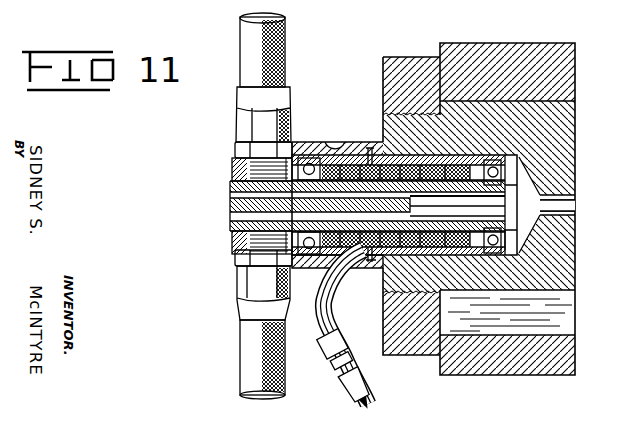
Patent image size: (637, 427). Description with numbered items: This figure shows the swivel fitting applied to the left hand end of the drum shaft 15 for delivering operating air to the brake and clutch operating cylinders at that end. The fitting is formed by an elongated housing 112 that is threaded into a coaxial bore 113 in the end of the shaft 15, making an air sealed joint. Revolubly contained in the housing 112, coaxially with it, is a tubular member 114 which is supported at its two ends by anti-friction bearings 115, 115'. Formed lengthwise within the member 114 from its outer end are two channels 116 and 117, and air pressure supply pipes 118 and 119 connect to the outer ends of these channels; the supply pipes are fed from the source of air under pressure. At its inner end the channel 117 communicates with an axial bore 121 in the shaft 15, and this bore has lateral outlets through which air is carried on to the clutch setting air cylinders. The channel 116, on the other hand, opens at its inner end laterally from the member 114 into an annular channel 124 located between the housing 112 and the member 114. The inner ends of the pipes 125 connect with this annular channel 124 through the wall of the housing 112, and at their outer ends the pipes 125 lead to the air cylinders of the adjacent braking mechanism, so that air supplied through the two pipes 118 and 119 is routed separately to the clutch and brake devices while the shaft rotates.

The shaft 15 is at (550, 122).
The elongated housing 112 is at (338, 142).
The coaxial bore 113 is at (505, 157).
The tubular member 114 is at (238, 242).
The anti-friction bearing 115 is at (232, 273).
The anti-friction bearing 115' is at (559, 220).
The channel 116 is at (296, 206).
The channel 117 is at (236, 160).
The air pressure supply pipe 118 is at (250, 346).
The air pressure supply pipe 119 is at (286, 56).
The axial bore 121 is at (558, 207).
The annular channel 124 is at (370, 148).
The pipe 125 is at (317, 310).